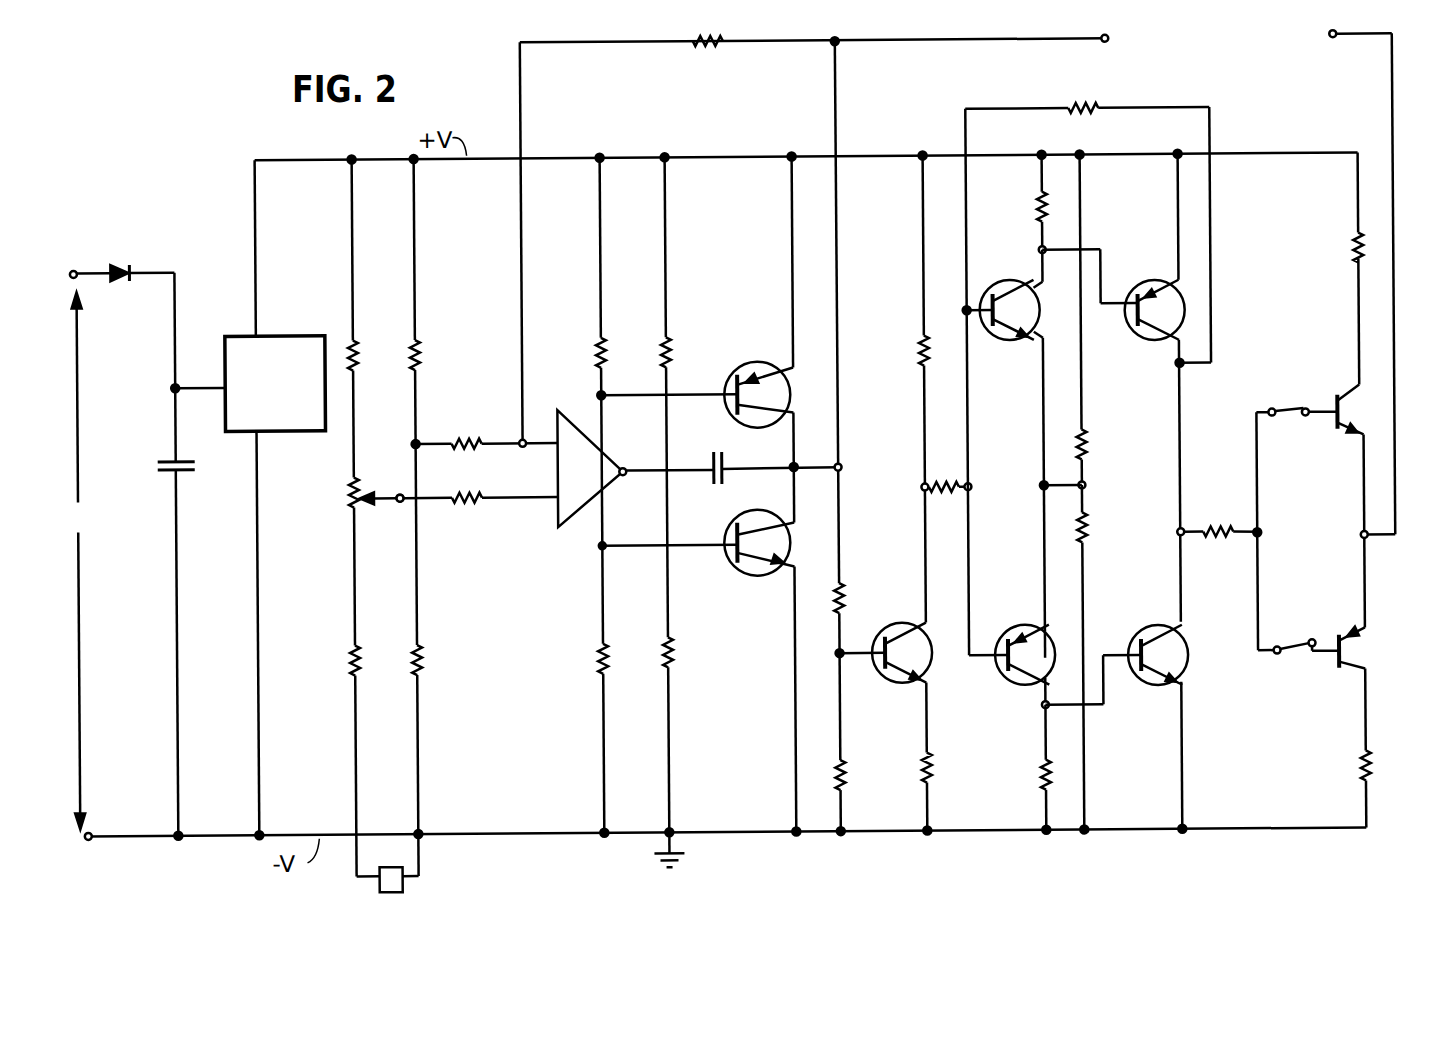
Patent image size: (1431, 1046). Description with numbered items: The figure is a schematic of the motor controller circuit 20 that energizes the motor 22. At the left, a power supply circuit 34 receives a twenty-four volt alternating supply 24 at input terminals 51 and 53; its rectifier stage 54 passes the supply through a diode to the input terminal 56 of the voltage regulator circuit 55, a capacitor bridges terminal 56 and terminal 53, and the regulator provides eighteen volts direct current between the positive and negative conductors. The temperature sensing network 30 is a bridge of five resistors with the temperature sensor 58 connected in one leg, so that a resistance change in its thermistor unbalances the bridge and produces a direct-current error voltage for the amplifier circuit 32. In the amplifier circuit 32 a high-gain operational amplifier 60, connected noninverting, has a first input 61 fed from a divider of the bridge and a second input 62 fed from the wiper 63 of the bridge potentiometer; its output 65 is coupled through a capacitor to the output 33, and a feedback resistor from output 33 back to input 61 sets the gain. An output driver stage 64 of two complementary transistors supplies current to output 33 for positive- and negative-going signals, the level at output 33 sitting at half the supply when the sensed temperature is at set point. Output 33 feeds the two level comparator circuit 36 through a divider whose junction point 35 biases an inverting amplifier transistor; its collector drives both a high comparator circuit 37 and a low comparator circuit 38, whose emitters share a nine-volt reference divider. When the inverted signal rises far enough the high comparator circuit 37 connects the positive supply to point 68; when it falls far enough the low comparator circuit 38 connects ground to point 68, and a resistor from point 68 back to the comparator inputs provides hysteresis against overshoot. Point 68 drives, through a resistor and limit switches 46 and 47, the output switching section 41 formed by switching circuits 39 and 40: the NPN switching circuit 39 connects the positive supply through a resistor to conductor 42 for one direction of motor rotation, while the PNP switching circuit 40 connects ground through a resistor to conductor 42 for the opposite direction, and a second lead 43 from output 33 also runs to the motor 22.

The motor controller circuit 20 is at (902, 877).
The motor 22 is at (1217, 47).
The 24 VAC supply 24 is at (84, 560).
The temperature sensing network 30 is at (426, 531).
The amplifier circuit 32 is at (683, 510).
The output 33 is at (848, 466).
The power supply circuit 34 is at (192, 528).
The point 35 is at (834, 662).
The two level comparator circuit 36 is at (1087, 457).
The high comparator circuit 37 is at (1152, 352).
The low comparator circuit 38 is at (1146, 709).
The switching circuit 39 is at (1327, 442).
The switching circuit 40 is at (1316, 663).
The output switching section 41 is at (1334, 430).
The conductor 42 is at (1394, 494).
The motor lead 43 is at (842, 286).
The limit switch 46 is at (1292, 410).
The limit switch 47 is at (1302, 638).
The input terminal 51 is at (84, 252).
The input terminal 53 is at (86, 836).
The rectifier stage 54 is at (160, 318).
The voltage regulator circuit 55 is at (309, 436).
The input terminal 56 is at (173, 389).
The temperature sensor 58 is at (403, 882).
The high-gain amplifier 60 is at (588, 418).
The first input 61 is at (552, 452).
The second input 62 is at (546, 502).
The wiper 63 is at (398, 500).
The output driver stage 64 is at (736, 309).
The output 65 is at (635, 474).
The point 68 is at (1178, 537).